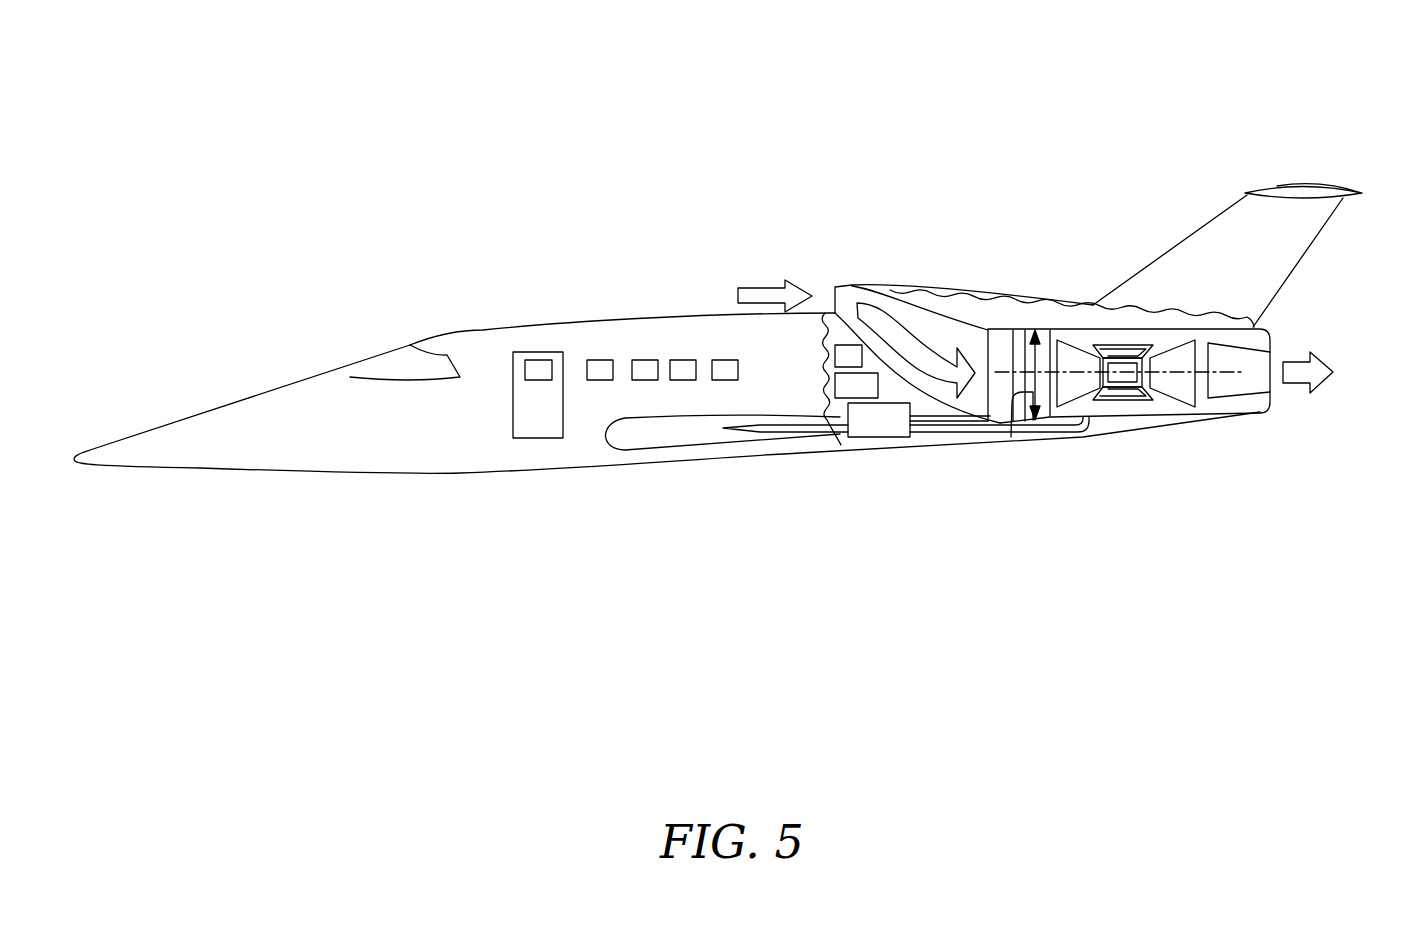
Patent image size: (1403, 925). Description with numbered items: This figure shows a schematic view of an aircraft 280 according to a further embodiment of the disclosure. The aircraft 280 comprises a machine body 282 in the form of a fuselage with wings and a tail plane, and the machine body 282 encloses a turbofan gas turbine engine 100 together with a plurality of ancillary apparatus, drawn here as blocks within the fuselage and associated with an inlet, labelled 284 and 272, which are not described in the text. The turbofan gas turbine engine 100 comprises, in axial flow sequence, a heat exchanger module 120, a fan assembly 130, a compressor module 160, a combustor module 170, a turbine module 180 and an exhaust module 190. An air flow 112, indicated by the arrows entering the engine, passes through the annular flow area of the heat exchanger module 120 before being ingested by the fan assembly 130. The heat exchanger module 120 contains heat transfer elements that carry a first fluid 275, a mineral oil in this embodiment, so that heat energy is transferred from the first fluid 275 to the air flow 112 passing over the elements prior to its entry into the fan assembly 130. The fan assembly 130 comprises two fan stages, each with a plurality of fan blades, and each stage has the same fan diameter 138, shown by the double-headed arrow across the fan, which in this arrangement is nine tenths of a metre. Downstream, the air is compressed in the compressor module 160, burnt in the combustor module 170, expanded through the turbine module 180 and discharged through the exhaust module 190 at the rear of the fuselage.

The aircraft 280 is at (826, 77).
The machine body 282 is at (483, 329).
The turbofan gas turbine engine 100 is at (1100, 433).
The air flow 112 is at (762, 282).
The inlet 284 is at (819, 294).
The heat exchanger module 120 is at (1003, 328).
The fan assembly 130 is at (1036, 328).
The fan diameter 138 is at (1011, 437).
The compressor module 160 is at (1083, 338).
The combustor module 170 is at (1127, 337).
The turbine module 180 is at (1167, 337).
The exhaust module 190 is at (1240, 395).
The fuel cell power system 272 is at (835, 356).
The first fluid 275 is at (933, 421).